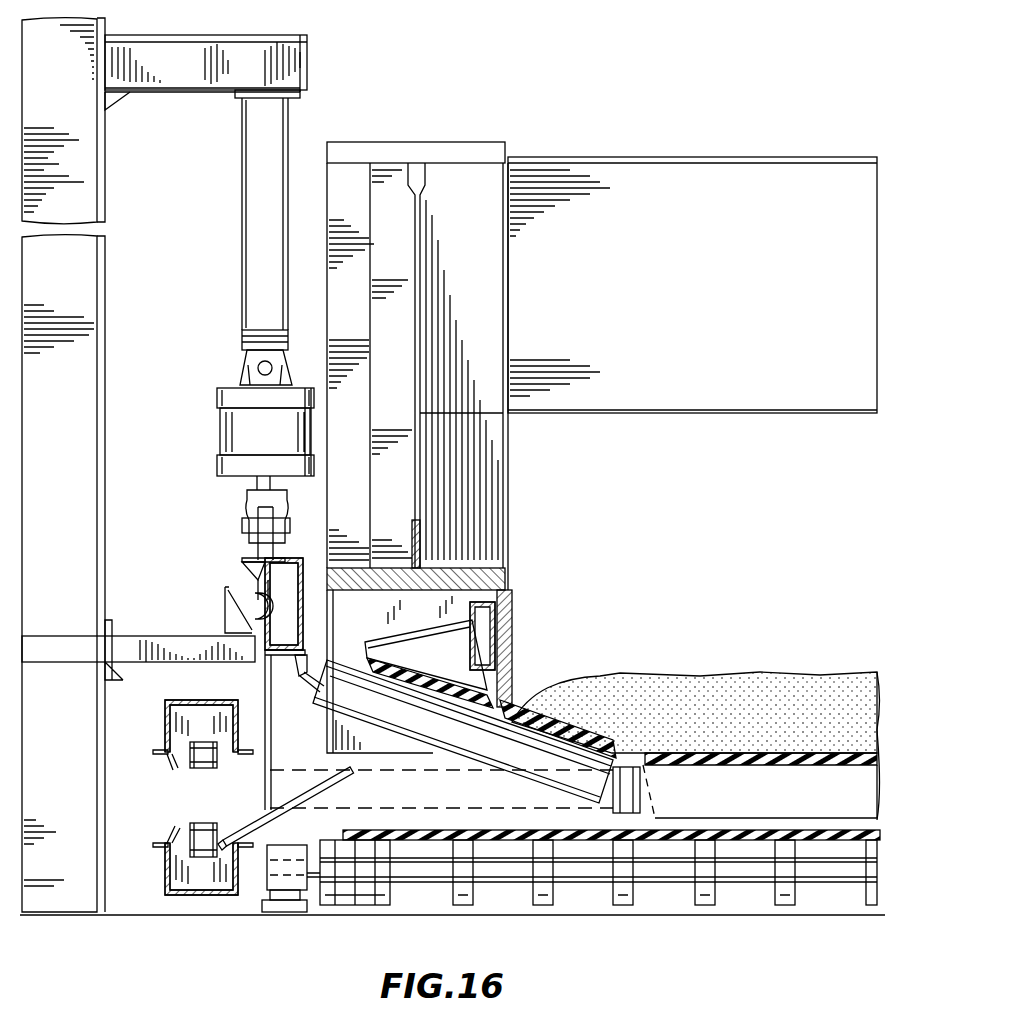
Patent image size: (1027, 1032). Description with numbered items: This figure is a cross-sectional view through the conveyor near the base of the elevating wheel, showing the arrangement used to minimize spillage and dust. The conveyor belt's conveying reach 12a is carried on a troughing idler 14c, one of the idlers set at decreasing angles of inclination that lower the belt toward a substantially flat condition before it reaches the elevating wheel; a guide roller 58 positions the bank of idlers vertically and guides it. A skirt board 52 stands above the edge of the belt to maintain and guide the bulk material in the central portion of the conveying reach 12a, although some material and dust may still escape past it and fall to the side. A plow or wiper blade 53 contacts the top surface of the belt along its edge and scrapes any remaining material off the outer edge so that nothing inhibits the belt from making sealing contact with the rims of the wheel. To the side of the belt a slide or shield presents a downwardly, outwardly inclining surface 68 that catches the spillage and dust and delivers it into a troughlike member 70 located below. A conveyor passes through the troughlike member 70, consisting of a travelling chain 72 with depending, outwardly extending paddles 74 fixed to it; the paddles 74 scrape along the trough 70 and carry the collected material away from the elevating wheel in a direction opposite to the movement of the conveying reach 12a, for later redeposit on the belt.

The guide roller 58 is at (250, 595).
The plow or wiper blade 53 is at (425, 645).
The skirt board 52 is at (505, 636).
The conveying reach 12a is at (582, 733).
The troughing idler 14c is at (485, 740).
The downwardly, outwardly inclining surface 68 is at (305, 795).
The travelling chain 72 is at (207, 823).
The paddle or vane 74 is at (185, 725).
The troughlike member 70 is at (220, 885).